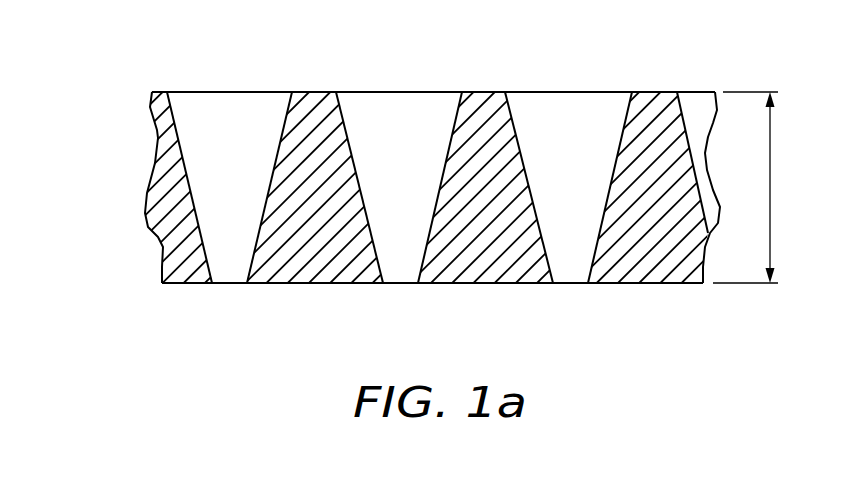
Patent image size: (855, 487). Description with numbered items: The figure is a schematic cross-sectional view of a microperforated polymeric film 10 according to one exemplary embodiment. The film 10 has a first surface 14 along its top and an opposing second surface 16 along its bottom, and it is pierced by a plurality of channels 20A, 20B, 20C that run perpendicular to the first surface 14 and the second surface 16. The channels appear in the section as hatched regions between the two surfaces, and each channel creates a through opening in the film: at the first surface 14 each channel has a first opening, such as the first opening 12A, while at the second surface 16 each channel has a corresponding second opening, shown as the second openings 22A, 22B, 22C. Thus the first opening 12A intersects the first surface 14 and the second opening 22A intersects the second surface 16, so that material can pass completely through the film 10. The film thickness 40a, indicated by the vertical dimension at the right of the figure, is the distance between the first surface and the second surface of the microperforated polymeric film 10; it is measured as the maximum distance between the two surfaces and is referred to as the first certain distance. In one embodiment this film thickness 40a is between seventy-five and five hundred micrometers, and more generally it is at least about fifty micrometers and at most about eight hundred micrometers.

The microperforated polymeric film 10 is at (427, 191).
The first opening 12A is at (199, 91).
The first surface 14 is at (154, 82).
The second surface 16 is at (188, 285).
The channel 20A is at (263, 110).
The channel 20B is at (398, 110).
The channel 20C is at (577, 110).
The second opening 22A is at (222, 297).
The second opening 22B is at (396, 296).
The second opening 22C is at (571, 296).
The film thickness 40a is at (754, 187).